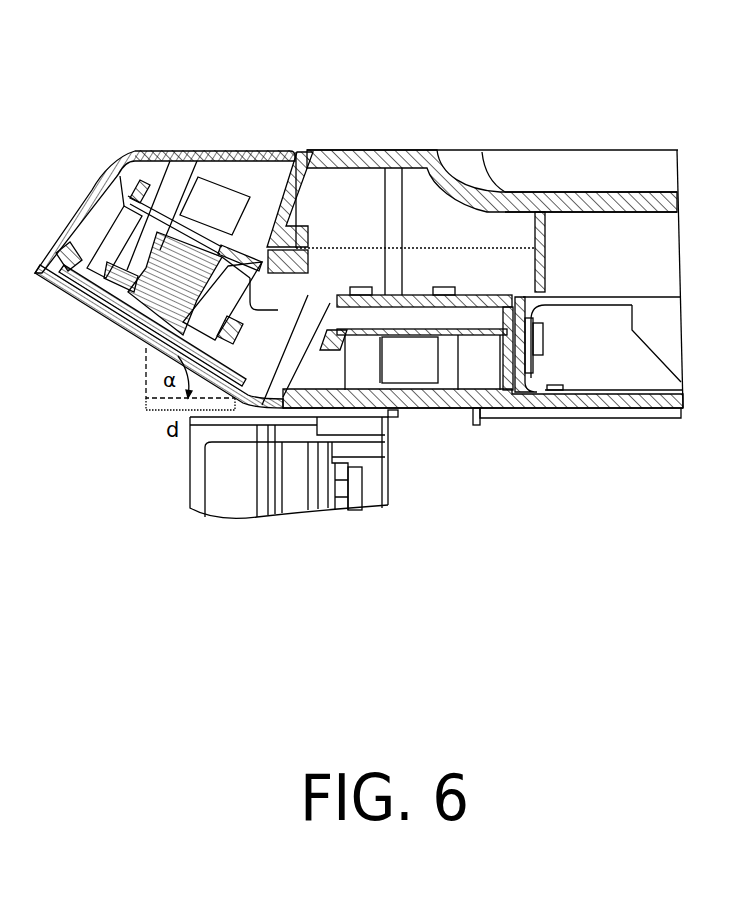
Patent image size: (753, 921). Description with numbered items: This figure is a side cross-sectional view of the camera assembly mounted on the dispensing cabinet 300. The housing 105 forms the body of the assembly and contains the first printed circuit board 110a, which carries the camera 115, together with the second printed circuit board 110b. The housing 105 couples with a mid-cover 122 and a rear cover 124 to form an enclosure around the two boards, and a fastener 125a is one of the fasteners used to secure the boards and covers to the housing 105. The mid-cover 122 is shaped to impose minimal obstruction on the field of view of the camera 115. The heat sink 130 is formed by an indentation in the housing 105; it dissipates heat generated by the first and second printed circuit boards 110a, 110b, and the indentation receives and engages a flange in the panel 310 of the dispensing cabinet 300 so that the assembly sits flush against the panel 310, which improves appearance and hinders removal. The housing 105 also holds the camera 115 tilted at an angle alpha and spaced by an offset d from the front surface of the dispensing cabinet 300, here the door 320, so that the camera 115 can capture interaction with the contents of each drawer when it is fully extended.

The housing 105 is at (157, 147).
The first printed circuit board 110a is at (110, 272).
The camera 115 is at (196, 246).
The mid-cover 122 is at (283, 263).
The heat sink 130 is at (181, 352).
The dispensing cabinet 300 is at (548, 152).
The panel 310 is at (503, 148).
The second printed circuit board 110b is at (482, 345).
The rear cover 124 is at (402, 396).
The fastener 125a is at (488, 429).
The door 320 is at (366, 504).